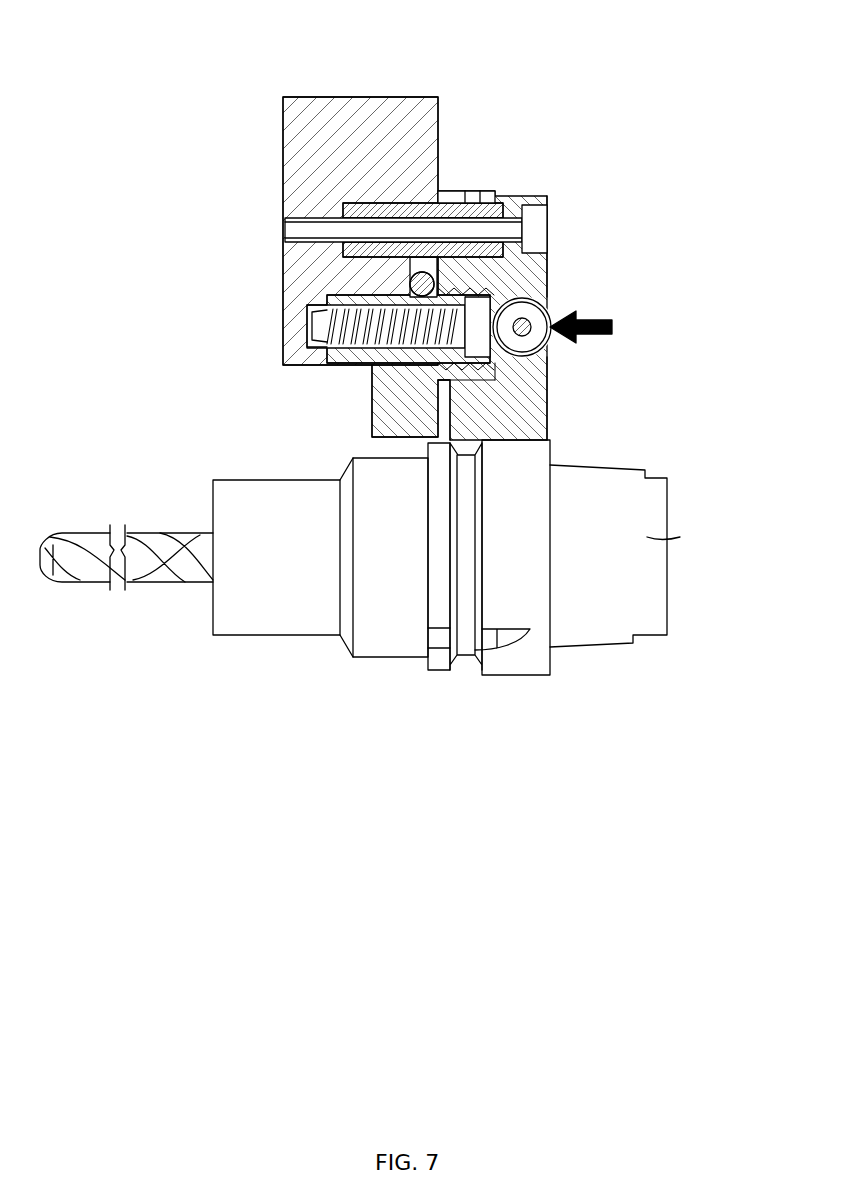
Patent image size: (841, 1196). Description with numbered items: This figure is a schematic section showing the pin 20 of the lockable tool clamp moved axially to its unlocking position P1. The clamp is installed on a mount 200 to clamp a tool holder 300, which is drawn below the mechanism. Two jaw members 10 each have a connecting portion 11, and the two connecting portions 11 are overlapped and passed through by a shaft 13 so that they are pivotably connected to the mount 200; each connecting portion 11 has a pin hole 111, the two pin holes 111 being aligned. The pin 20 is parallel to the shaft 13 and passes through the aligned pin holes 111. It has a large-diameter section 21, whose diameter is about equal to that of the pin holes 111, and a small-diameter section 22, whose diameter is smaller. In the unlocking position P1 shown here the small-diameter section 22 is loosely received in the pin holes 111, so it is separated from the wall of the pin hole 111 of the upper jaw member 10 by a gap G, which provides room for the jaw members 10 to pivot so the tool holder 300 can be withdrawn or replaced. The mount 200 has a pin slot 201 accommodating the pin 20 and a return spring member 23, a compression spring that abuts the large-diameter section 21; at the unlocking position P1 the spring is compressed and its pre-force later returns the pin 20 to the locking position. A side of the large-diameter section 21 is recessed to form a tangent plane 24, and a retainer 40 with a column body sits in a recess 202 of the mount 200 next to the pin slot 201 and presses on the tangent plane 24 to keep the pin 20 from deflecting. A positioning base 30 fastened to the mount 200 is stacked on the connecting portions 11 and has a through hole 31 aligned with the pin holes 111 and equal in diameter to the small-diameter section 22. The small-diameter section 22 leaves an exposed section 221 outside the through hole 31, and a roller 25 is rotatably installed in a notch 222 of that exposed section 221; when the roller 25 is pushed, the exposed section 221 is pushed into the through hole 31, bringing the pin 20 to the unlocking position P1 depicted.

The mount 200 is at (398, 117).
The shaft 13 is at (370, 205).
The retainer 40 is at (412, 276).
The recess 202 is at (410, 292).
The tangent plane 24 is at (346, 296).
The pin slot 201 is at (327, 296).
The return spring member 23 is at (306, 330).
The unlocking position P1 is at (300, 361).
The pin 20 is at (228, 412).
The large-diameter section 21 is at (328, 363).
The small-diameter section 22 is at (437, 392).
The pin hole 111 is at (453, 285).
The jaw member 10 is at (402, 200).
The connecting portion 11 is at (486, 193).
The positioning base 30 is at (530, 258).
The through hole 31 is at (548, 298).
The exposed section 221 is at (566, 308).
The roller 25 is at (540, 343).
The notch 222 is at (497, 358).
The gap G is at (490, 385).
The tool holder 300 is at (655, 540).